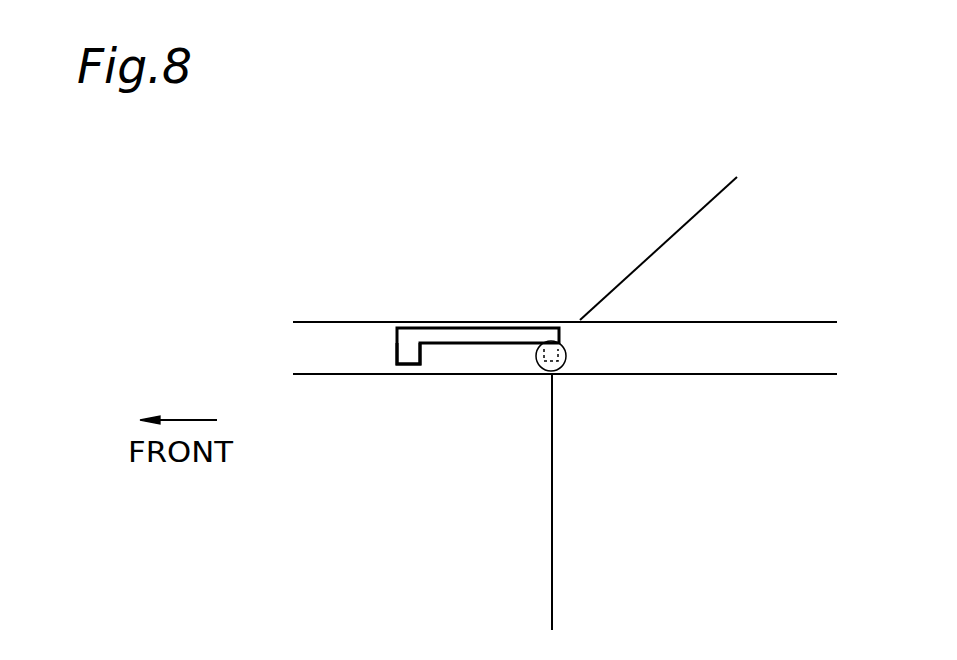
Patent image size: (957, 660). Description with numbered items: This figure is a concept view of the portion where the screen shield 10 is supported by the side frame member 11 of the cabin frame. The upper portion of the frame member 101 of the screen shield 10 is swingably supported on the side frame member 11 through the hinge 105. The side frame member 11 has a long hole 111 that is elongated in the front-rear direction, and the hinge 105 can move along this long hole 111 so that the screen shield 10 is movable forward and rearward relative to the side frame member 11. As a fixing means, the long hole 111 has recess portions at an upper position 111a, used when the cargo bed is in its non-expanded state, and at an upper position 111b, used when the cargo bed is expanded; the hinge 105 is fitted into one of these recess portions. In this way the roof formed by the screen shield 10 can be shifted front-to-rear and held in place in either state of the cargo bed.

The screen shield 10 is at (639, 228).
The frame member 101 is at (687, 223).
The side frame member 11 is at (333, 350).
The long hole 111 is at (483, 345).
The upper position (expanded state) 111b is at (407, 365).
The upper position (non-expanded state) 111a is at (557, 378).
The hinge 105 is at (563, 361).